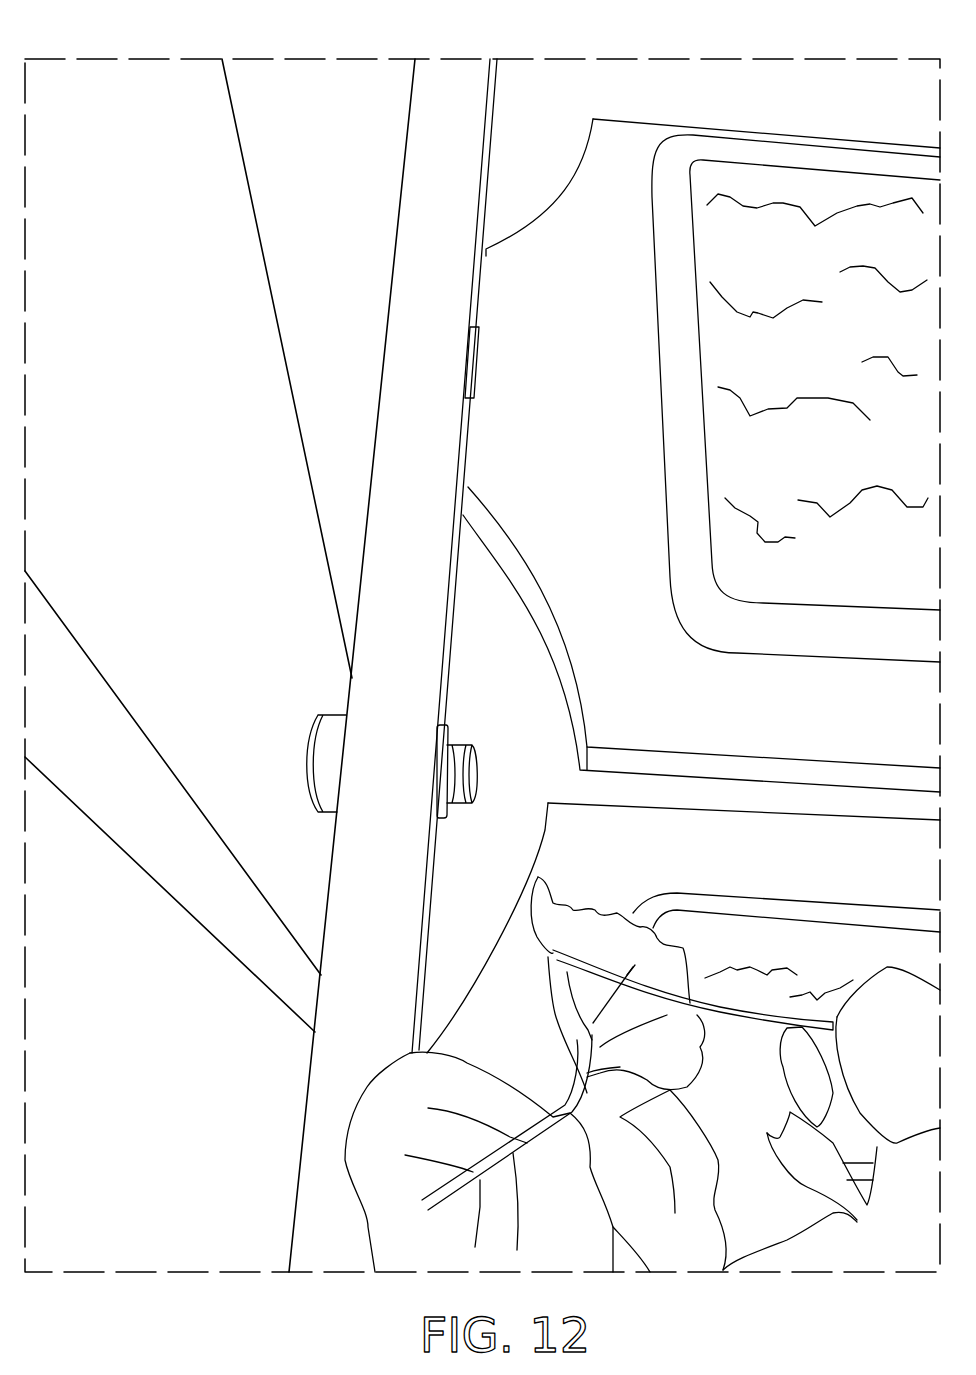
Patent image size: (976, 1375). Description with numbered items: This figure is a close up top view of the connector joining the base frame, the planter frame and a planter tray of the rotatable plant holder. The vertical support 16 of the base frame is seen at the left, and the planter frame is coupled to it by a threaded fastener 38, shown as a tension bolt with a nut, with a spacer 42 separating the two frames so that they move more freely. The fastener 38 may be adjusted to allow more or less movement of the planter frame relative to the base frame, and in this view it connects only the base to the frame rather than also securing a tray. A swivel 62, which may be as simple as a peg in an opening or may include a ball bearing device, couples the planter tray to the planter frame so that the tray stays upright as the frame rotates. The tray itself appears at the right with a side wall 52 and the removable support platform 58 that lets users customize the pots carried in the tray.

The vertical support 16 is at (168, 663).
The threaded fastener 38 is at (455, 740).
The spacer 42 is at (328, 737).
The side wall 52 is at (585, 292).
The removable support platform 58 is at (828, 160).
The swivel 62 is at (452, 350).